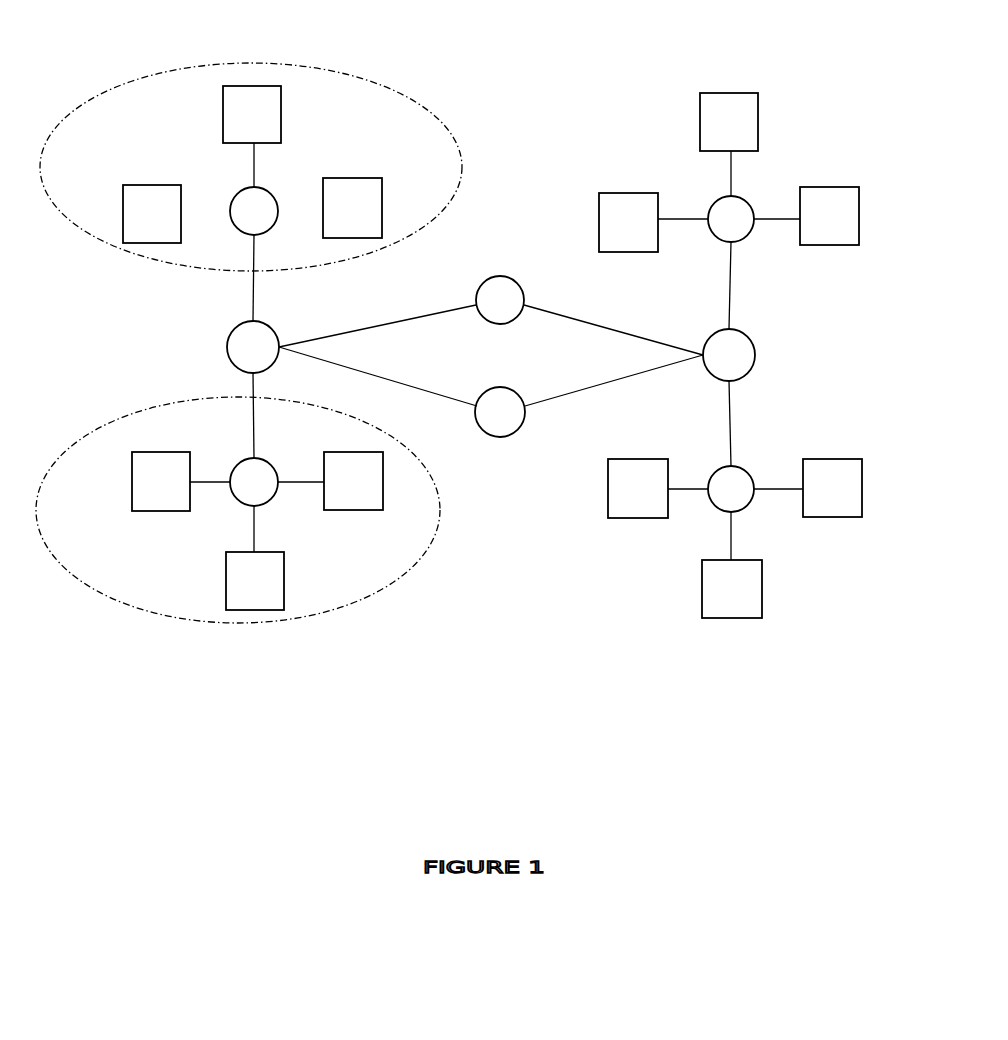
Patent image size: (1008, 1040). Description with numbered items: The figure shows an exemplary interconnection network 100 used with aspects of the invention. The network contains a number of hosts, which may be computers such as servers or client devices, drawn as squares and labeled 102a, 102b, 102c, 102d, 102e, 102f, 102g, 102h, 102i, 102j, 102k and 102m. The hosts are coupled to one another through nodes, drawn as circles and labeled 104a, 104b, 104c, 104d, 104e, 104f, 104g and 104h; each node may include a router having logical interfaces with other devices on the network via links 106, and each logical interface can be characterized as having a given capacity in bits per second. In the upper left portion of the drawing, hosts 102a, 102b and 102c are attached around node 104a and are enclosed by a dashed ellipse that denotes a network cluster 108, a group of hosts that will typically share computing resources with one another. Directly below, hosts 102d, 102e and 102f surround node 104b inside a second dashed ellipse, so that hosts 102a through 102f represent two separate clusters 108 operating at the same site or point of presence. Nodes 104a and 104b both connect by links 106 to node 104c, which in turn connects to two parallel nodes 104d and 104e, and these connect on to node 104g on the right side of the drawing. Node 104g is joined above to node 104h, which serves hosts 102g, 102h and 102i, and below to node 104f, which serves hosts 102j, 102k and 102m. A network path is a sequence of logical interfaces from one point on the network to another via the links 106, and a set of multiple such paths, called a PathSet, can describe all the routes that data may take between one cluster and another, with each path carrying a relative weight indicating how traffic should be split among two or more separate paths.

The interconnection network 100 is at (156, 29).
The host 102a is at (123, 212).
The host 102b is at (223, 124).
The host 102c is at (382, 200).
The host 102d is at (132, 480).
The host 102e is at (250, 610).
The host 102f is at (353, 510).
The host 102g is at (599, 220).
The host 102h is at (700, 126).
The host 102i is at (832, 187).
The host 102j is at (608, 487).
The host 102k is at (728, 618).
The host 102m is at (830, 518).
The node 104a is at (241, 233).
The node 104b is at (238, 463).
The node 104c is at (229, 349).
The node 104d is at (500, 276).
The node 104e is at (500, 437).
The node 104f is at (750, 470).
The node 104g is at (755, 355).
The node 104h is at (747, 238).
The link 106 is at (378, 323).
The network cluster 108 is at (395, 90).